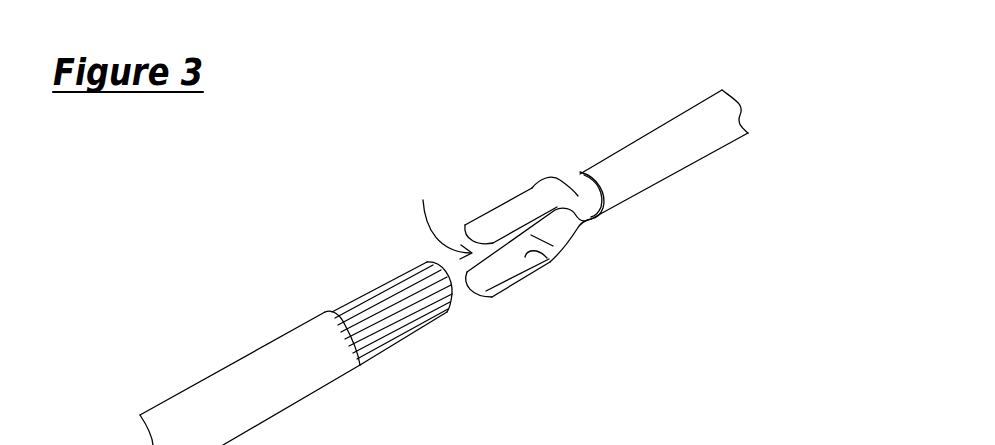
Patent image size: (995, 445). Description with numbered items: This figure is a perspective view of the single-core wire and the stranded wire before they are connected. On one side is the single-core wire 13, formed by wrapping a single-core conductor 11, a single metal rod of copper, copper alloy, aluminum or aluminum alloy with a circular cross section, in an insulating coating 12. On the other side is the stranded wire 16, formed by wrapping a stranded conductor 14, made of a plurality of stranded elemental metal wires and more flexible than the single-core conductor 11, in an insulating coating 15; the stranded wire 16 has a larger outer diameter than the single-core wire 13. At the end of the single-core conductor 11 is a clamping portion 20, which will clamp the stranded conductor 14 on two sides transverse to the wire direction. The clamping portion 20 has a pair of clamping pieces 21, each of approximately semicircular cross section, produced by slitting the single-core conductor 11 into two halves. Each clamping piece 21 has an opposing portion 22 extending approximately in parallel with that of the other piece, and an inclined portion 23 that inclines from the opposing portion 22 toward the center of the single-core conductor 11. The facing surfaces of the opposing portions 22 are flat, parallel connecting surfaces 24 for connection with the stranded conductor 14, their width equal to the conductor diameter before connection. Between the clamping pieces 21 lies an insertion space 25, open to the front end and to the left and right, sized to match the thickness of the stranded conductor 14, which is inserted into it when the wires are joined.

The single-core conductor 11 is at (580, 197).
The insulating coating 12 is at (664, 116).
The single-core wire 13 is at (712, 115).
The stranded conductor 14 is at (382, 295).
The insulating coating 15 is at (287, 342).
The stranded wire 16 is at (296, 316).
The clamping portion 20 is at (559, 245).
The clamping pieces 21 is at (508, 268).
The opposing portion 22 is at (522, 278).
The inclined portion 23 is at (559, 232).
The connecting surfaces 24 is at (547, 258).
The insertion space 25 is at (442, 212).